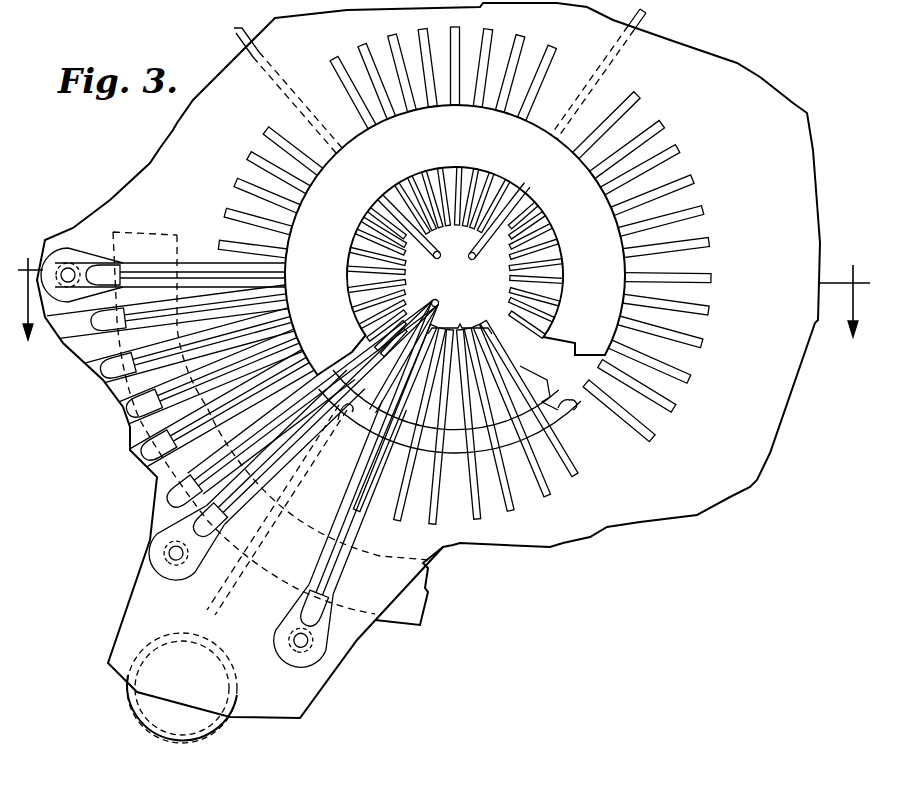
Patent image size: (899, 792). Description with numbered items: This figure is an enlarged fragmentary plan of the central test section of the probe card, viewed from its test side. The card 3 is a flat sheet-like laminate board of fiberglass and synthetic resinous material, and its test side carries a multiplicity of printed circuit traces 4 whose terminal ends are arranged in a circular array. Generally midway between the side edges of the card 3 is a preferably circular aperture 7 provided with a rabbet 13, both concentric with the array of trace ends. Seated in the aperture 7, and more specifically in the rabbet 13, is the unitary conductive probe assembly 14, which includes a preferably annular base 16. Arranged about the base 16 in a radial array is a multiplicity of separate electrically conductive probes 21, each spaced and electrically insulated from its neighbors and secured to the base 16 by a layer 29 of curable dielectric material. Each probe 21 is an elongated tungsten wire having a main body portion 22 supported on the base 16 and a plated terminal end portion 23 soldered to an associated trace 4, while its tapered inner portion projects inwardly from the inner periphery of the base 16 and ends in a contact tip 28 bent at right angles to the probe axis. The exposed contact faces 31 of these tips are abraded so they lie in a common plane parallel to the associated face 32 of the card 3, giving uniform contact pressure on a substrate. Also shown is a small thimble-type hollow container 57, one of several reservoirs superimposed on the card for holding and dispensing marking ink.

The card 3 is at (758, 96).
The printed circuit traces 4 is at (444, 316).
The aperture 7 is at (388, 410).
The rabbet 13 is at (338, 422).
The unitary conductive probe assembly 14 is at (606, 452).
The base 16 is at (569, 410).
The electrically conductive probes 21 is at (492, 234).
The main body portion 22 is at (549, 82).
The terminal end portion 23 is at (216, 419).
The contact tip 28 is at (465, 408).
The layer of dielectric material 29 is at (455, 240).
The contact faces 31 is at (455, 262).
The face of the card 32 is at (700, 455).
The thimble-type hollow containers 57 is at (138, 720).